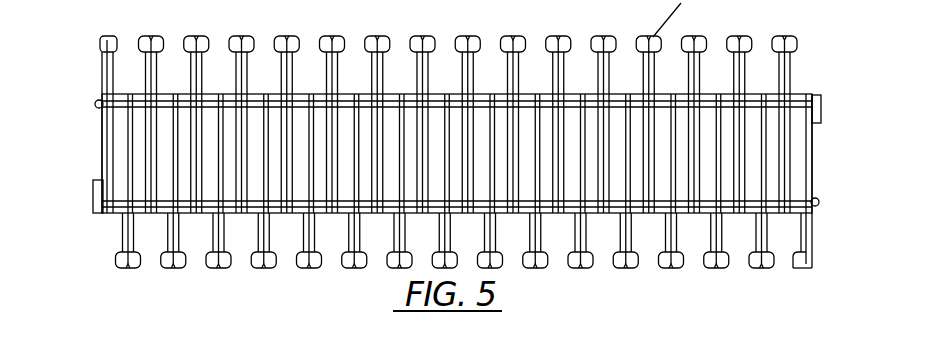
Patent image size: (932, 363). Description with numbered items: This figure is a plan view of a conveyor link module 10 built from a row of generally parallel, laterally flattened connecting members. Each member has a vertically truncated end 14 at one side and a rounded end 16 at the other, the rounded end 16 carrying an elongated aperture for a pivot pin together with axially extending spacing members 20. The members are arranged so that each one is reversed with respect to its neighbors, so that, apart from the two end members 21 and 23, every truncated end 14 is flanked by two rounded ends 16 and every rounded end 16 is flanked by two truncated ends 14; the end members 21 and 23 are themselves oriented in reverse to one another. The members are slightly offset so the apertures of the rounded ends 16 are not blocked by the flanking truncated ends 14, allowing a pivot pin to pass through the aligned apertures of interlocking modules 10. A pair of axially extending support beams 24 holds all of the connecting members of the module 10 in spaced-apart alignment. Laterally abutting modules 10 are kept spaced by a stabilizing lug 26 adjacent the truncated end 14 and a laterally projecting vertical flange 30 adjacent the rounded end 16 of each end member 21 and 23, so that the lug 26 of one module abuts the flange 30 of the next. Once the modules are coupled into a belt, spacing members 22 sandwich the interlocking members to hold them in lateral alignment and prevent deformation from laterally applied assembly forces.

The module 10 is at (474, 155).
The vertically truncated end 14 is at (784, 216).
The rounded end 16 is at (795, 43).
The spacing members 20 is at (310, 268).
The end member 21 is at (816, 160).
The spacing members 22 is at (452, 38).
The end member 23 is at (102, 132).
The support beams 24 is at (798, 98).
The stabilizing lug 26 is at (92, 198).
The vertical flange 30 is at (95, 104).